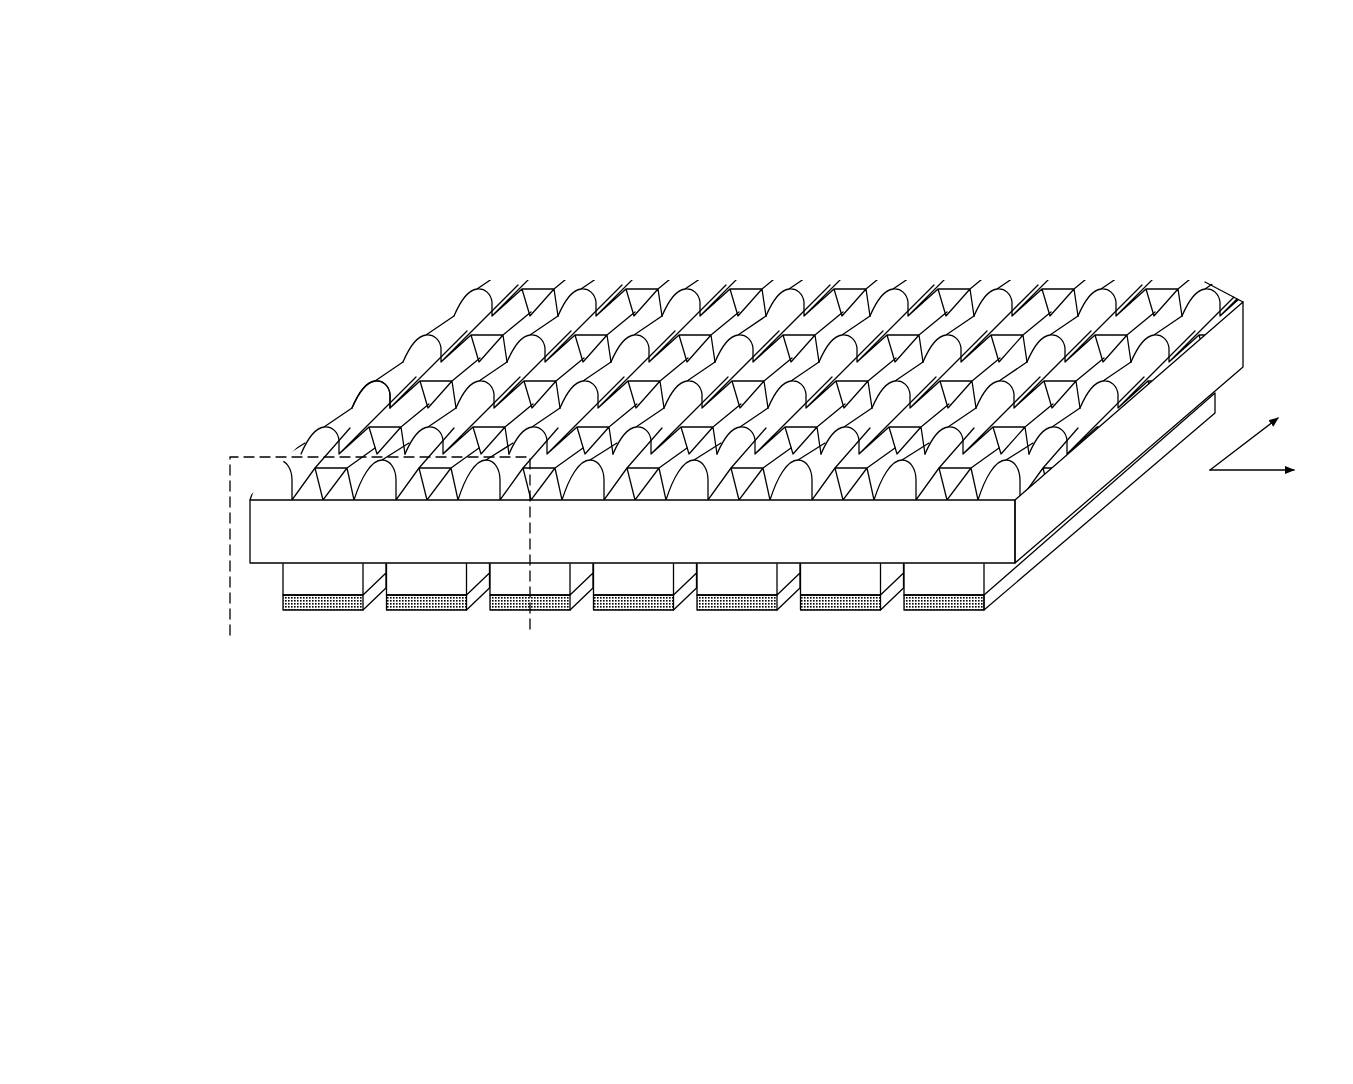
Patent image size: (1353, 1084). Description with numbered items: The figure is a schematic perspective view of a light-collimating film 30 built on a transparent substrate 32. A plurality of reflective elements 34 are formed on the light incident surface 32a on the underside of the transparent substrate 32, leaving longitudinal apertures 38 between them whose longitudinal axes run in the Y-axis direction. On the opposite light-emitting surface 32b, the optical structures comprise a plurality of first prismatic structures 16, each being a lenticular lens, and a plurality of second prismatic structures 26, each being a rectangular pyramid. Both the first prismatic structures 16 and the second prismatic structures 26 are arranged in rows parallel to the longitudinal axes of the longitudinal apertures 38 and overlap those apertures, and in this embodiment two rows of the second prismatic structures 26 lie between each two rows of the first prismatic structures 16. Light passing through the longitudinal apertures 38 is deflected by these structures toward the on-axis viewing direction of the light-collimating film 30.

The light-collimating film 30 is at (1256, 79).
The second prismatic structures 26 is at (550, 290).
The first prismatic structures 16 is at (374, 380).
The transparent substrate 32 is at (242, 527).
The light incident surface 32a is at (996, 562).
The light-emitting surface 32b is at (993, 500).
The reflective elements 34 is at (320, 614).
The longitudinal apertures 38 is at (690, 602).